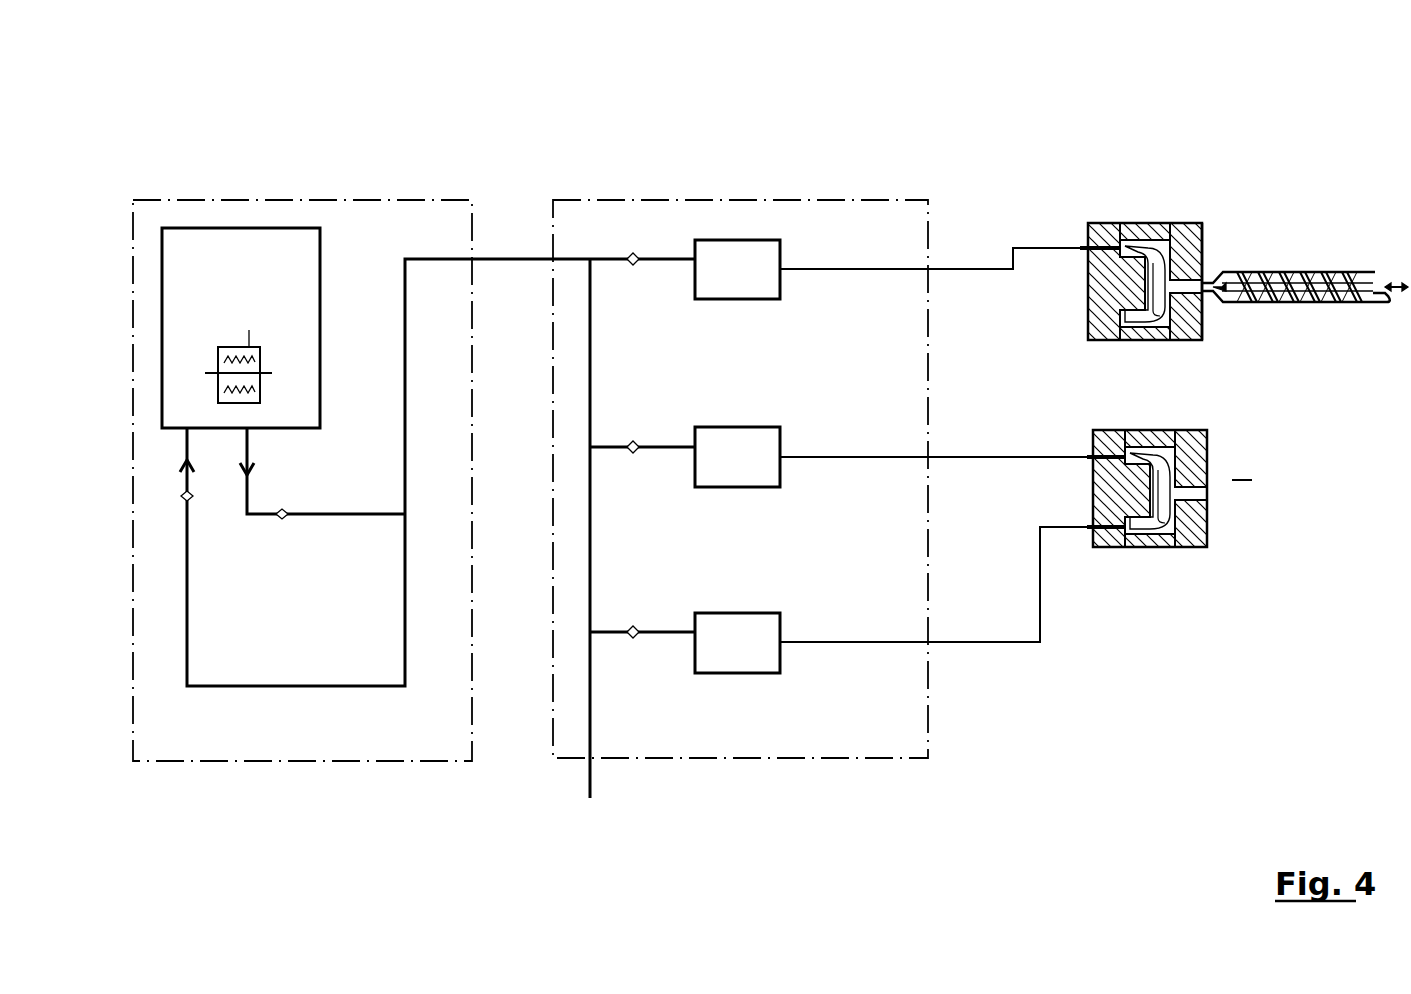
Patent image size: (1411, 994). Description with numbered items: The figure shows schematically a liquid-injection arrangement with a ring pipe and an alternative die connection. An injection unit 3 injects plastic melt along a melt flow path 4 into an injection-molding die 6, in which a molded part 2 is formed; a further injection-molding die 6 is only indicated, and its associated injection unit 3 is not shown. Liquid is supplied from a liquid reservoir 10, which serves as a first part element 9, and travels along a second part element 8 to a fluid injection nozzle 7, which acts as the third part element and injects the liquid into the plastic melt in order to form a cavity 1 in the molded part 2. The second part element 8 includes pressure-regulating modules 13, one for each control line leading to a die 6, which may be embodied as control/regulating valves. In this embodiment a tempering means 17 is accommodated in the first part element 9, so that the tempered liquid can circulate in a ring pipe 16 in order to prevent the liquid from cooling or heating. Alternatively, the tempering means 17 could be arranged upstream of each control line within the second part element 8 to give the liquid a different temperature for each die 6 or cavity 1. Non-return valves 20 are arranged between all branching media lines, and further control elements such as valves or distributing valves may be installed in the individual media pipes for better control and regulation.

The cavity 1 is at (1147, 247).
The molded part 2 is at (1203, 237).
The injection unit 3 is at (1308, 249).
The melt flow path 4 is at (1190, 280).
The injection-molding die 6 is at (1182, 235).
The fluid injection nozzle 7 is at (1107, 235).
The second part element 8 is at (587, 200).
The first part element 9 is at (143, 200).
The liquid reservoir 10 is at (217, 300).
The pressure-regulating module 13 is at (755, 630).
The ring pipe 16 is at (345, 515).
The tempering means 17 is at (249, 347).
The non-return valves 20 is at (633, 632).